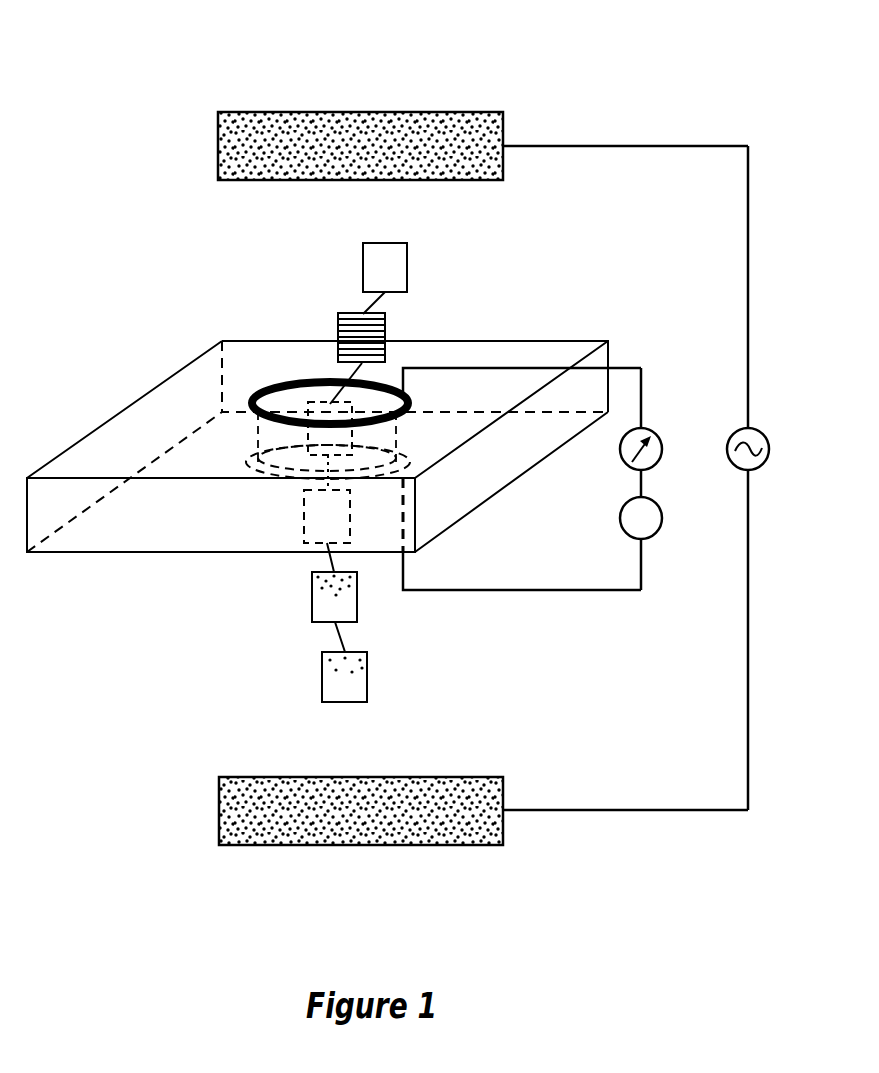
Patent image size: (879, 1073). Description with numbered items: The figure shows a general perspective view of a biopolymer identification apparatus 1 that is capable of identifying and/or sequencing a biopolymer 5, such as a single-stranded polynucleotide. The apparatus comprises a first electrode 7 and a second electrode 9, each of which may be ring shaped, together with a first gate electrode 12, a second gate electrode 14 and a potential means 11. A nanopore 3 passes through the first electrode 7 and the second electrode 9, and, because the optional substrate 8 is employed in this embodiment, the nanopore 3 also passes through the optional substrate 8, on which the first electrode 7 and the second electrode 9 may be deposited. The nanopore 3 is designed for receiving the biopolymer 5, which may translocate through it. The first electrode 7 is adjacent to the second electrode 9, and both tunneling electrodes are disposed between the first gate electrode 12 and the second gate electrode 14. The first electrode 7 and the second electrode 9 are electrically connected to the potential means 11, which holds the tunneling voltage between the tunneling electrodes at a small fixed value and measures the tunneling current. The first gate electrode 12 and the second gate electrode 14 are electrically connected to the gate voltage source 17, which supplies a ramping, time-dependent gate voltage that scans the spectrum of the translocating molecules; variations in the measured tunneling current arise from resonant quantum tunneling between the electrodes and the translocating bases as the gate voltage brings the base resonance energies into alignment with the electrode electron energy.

The biopolymer identification apparatus 1 is at (384, 34).
The nanopore 3 is at (306, 412).
The biopolymer 5 is at (408, 278).
The first electrode 7 is at (243, 391).
The optional substrate 8 is at (573, 341).
The second electrode 9 is at (250, 483).
The potential means 11 is at (653, 430).
The first gate electrode 12 is at (465, 112).
The second gate electrode 14 is at (467, 777).
The gate voltage source 17 is at (752, 428).